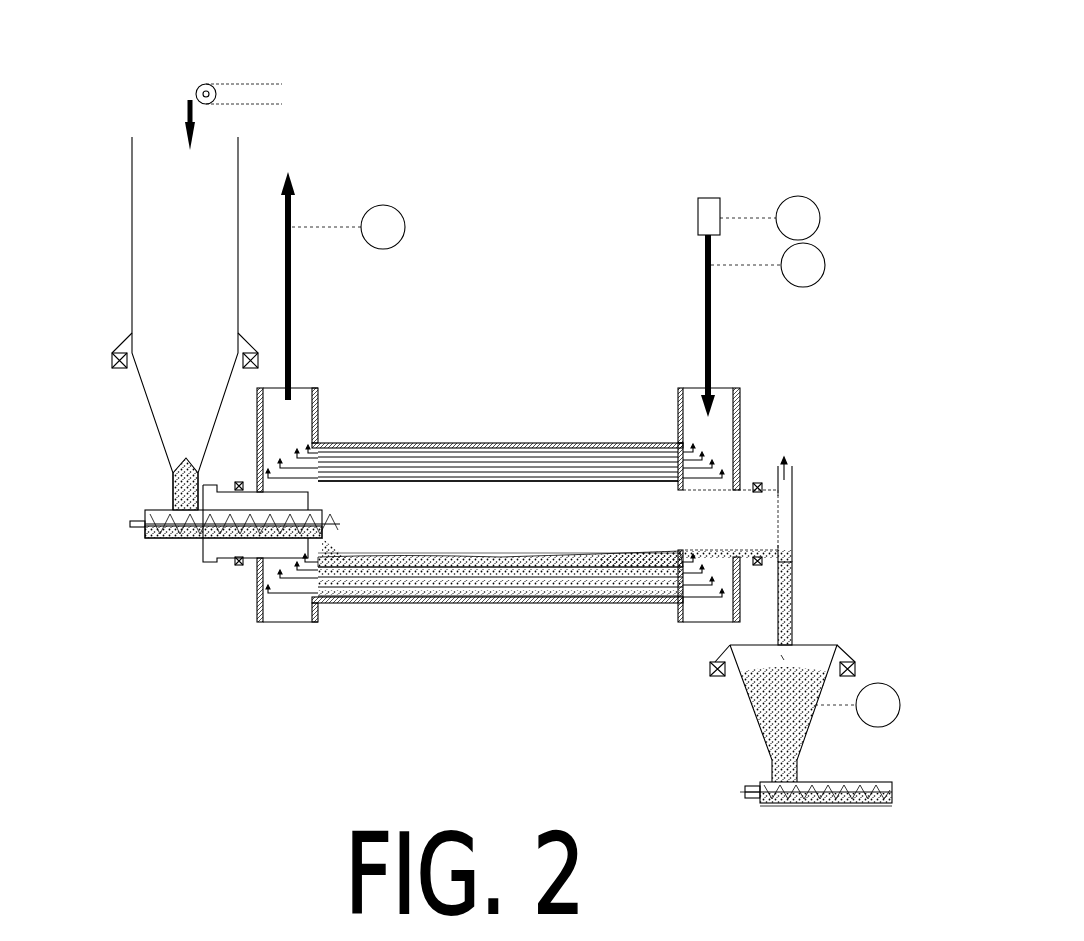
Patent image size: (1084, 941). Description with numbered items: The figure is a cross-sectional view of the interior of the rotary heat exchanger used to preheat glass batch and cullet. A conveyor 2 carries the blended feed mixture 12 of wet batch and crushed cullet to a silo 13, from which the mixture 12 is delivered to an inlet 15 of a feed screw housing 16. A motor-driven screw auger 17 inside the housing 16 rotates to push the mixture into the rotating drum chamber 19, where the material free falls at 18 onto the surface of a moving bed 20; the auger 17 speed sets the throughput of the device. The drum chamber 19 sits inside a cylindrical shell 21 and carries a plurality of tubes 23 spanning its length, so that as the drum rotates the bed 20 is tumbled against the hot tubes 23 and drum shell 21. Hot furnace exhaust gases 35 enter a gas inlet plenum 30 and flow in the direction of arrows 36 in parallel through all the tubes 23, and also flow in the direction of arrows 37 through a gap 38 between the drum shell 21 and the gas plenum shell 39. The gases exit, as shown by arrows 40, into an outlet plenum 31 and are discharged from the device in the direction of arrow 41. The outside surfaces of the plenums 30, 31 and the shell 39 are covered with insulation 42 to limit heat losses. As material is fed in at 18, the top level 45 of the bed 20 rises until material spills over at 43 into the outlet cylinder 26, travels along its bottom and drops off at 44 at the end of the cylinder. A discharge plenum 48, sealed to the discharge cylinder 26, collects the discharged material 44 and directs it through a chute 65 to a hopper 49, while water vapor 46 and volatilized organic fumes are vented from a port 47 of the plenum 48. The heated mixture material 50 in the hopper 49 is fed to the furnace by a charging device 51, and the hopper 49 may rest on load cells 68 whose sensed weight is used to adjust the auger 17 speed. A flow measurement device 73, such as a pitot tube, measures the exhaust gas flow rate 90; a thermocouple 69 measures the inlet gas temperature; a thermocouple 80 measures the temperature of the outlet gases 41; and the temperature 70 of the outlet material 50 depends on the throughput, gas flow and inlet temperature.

The conveyor 2 is at (243, 83).
The feed mixture 12 is at (193, 130).
The silo 13 is at (132, 245).
The inlet 15 is at (172, 498).
The feed screw housing 16 is at (167, 540).
The screw auger 17 is at (243, 543).
The material infeed 18 is at (330, 547).
The rotating drum chamber 19 is at (482, 513).
The moving bed 20 is at (365, 556).
The cylindrical shell 21 is at (425, 600).
The tubes 23 is at (472, 583).
The outlet cylinder 26 is at (707, 508).
The gas inlet plenum 30 is at (717, 432).
The outlet plenum 31 is at (295, 408).
The hot furnace exhaust gases 35 is at (711, 313).
The gas flow arrows through tubes 36 is at (690, 470).
The gas flow arrows through gap 37 is at (682, 622).
The gap 38 is at (555, 603).
The gas plenum shell 39 is at (505, 600).
The gas exit arrows 40 is at (298, 456).
The gas discharge arrow 41 is at (293, 297).
The insulation 42 is at (462, 443).
The spill-over point 43 is at (683, 548).
The discharged material mixture 44 is at (793, 553).
The top level 45 is at (632, 553).
The water vapor 46 is at (788, 460).
The port 47 is at (792, 478).
The discharge plenum 48 is at (793, 532).
The hopper 49 is at (823, 645).
The heated mixture material 50 is at (763, 740).
The charging device 51 is at (883, 782).
The chute 65 is at (793, 607).
The load cells 68 is at (857, 660).
The inlet gas thermocouple 69 is at (822, 248).
The material outlet temperature 70 is at (896, 686).
The flow measurement device 73 is at (710, 202).
The outlet gas thermocouple 80 is at (402, 211).
The exhaust gas flow rate 90 is at (820, 208).